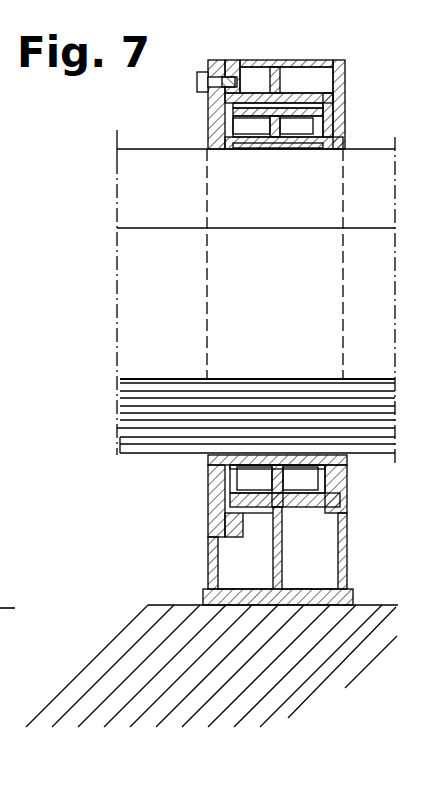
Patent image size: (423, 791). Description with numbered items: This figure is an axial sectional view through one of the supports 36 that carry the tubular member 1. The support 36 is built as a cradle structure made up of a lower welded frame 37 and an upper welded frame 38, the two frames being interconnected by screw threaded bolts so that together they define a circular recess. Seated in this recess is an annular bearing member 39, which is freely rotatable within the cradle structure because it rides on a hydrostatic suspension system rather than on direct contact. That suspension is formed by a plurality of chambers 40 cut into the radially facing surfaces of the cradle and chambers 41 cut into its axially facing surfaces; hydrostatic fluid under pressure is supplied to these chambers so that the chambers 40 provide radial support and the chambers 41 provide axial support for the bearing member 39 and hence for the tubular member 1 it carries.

The tubular member 1 is at (170, 146).
The support 36 is at (209, 56).
The lower welded frame 37 is at (348, 545).
The upper welded frame 38 is at (344, 87).
The annular bearing member 39 is at (257, 470).
The chamber 40 is at (257, 470).
The chamber 41 is at (343, 114).